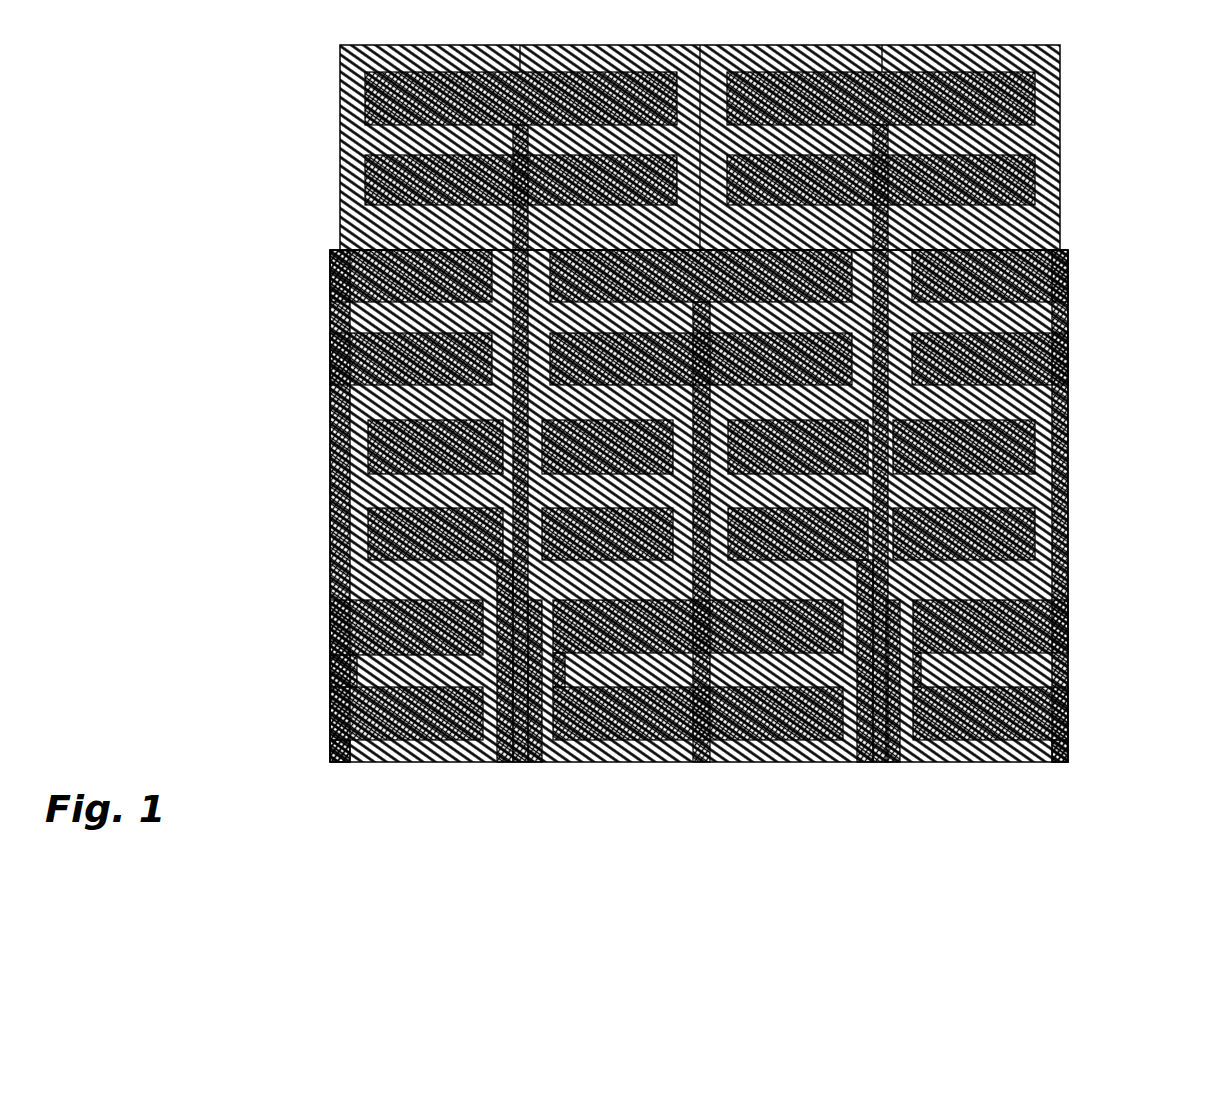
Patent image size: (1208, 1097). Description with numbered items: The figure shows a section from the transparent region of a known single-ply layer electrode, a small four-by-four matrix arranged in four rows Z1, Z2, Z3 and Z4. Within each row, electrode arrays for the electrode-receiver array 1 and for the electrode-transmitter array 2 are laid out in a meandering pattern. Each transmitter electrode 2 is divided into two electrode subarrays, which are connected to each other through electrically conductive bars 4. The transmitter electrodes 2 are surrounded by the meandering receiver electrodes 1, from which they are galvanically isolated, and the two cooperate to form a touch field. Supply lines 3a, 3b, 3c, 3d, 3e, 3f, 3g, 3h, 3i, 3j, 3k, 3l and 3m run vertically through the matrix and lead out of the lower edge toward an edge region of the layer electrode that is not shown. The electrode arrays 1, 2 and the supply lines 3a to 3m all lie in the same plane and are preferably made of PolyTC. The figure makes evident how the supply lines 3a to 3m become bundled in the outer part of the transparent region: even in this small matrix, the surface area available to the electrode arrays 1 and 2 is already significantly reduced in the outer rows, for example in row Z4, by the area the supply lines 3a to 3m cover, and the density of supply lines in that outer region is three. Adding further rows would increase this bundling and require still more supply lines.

The receiver electrode 1 is at (1060, 213).
The transmitter electrode 2 is at (1068, 262).
The electrically conductive bar 4 is at (1060, 140).
The supply line 3a is at (340, 763).
The supply line 3b is at (355, 763).
The supply line 3c is at (503, 763).
The supply line 3d is at (520, 763).
The supply line 3e is at (533, 763).
The supply line 3f is at (678, 763).
The supply line 3g is at (703, 763).
The supply line 3h is at (718, 763).
The supply line 3i is at (863, 763).
The supply line 3j is at (880, 763).
The supply line 3k is at (897, 763).
The supply line 3l is at (1050, 763).
The supply line 3m is at (1057, 763).
The row Z1 is at (318, 152).
The row Z2 is at (318, 320).
The row Z3 is at (318, 484).
The row Z4 is at (318, 672).